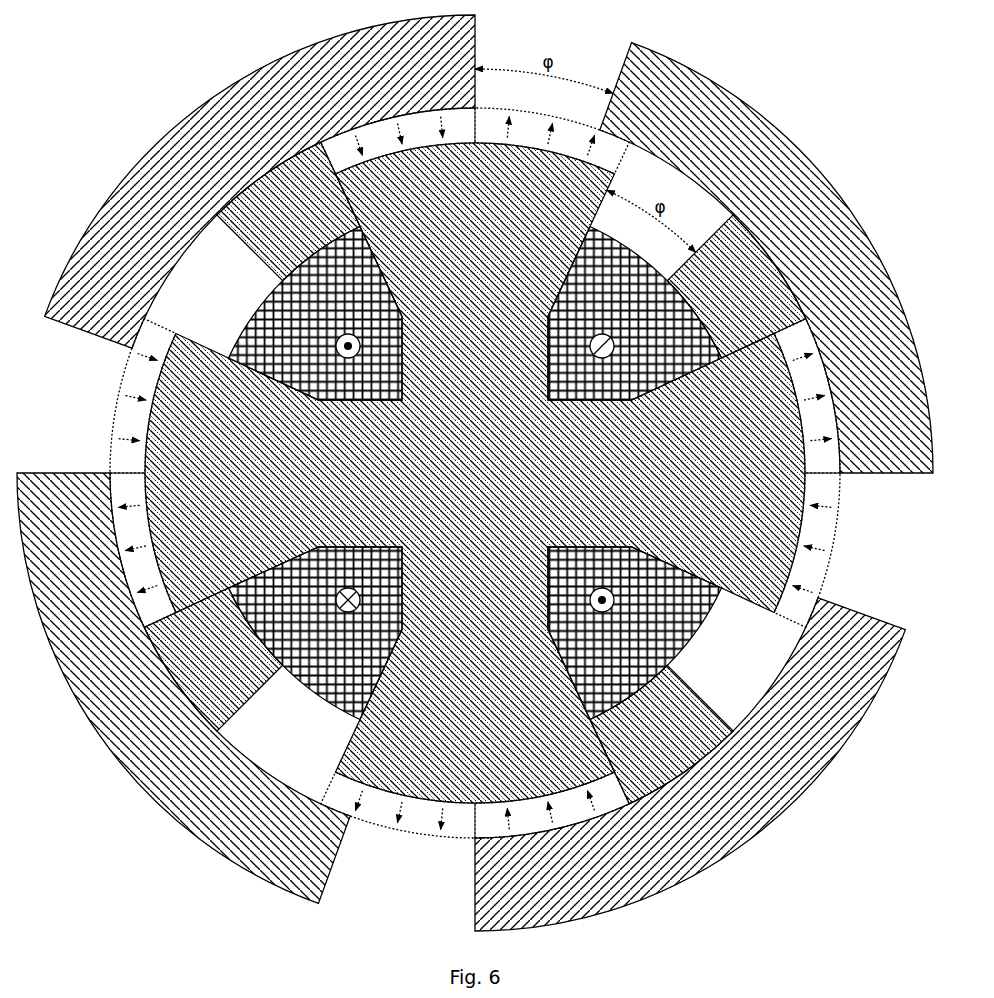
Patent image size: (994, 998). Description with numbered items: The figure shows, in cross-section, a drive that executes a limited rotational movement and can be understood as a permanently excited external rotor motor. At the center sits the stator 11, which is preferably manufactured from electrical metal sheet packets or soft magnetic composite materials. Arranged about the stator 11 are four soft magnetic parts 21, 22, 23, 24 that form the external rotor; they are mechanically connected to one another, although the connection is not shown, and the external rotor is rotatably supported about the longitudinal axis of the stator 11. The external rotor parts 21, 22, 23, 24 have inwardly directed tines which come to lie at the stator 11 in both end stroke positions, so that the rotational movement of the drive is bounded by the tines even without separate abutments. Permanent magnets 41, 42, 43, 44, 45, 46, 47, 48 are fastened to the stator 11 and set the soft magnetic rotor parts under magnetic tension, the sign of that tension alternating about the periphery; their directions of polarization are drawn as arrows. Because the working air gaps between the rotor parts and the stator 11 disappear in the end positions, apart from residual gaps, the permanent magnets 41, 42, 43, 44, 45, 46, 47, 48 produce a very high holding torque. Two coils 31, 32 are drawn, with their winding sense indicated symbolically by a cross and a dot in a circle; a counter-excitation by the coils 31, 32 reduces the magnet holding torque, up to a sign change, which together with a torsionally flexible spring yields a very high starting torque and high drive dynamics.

The stator 11 is at (475, 473).
The soft magnetic part of the external rotor 21 is at (766, 258).
The soft magnetic part of the external rotor 22 is at (260, 181).
The soft magnetic part of the external rotor 23 is at (183, 688).
The soft magnetic part of the external rotor 24 is at (690, 764).
The coil 31 is at (475, 314).
The coil 32 is at (475, 633).
The permanent magnet 41 is at (807, 396).
The permanent magnet 42 is at (398, 141).
The permanent magnet 43 is at (552, 141).
The permanent magnet 44 is at (143, 396).
The permanent magnet 45 is at (143, 550).
The permanent magnet 46 is at (552, 805).
The permanent magnet 47 is at (398, 805).
The permanent magnet 48 is at (807, 550).